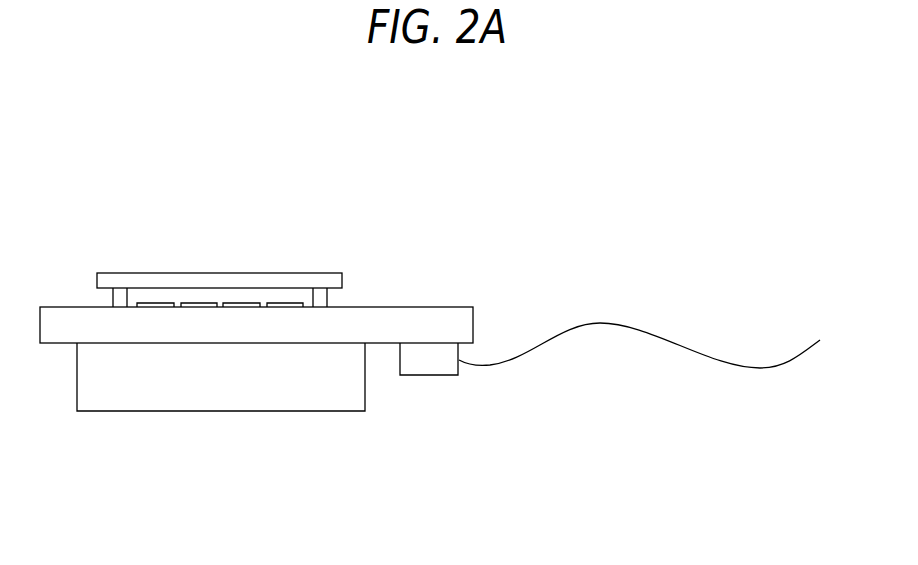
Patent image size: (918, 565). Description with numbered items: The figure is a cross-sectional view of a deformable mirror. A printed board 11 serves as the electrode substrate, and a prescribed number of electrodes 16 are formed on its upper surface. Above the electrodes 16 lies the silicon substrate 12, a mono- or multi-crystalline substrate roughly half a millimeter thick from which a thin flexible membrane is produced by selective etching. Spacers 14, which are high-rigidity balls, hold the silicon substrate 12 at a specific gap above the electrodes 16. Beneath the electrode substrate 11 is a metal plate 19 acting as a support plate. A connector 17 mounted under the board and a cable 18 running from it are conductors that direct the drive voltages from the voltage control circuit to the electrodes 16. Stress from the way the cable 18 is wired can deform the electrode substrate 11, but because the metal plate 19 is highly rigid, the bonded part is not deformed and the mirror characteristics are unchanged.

The printed board 11 is at (750, 267).
The silicon substrate 12 is at (336, 265).
The spacers 14 is at (329, 289).
The electrodes 16 is at (292, 288).
The connector 17 is at (670, 429).
The cable 18 is at (742, 350).
The metal plate 19 is at (265, 398).